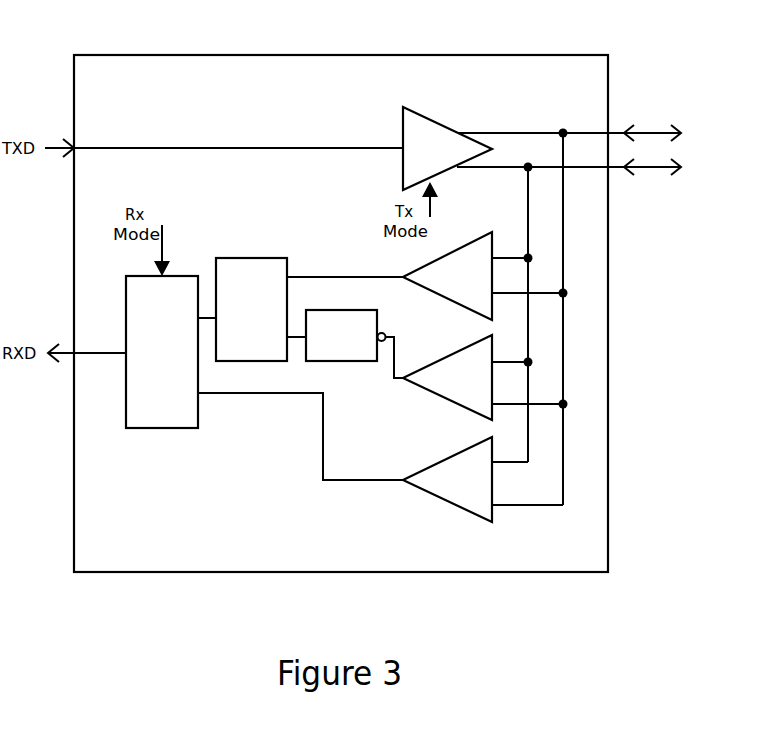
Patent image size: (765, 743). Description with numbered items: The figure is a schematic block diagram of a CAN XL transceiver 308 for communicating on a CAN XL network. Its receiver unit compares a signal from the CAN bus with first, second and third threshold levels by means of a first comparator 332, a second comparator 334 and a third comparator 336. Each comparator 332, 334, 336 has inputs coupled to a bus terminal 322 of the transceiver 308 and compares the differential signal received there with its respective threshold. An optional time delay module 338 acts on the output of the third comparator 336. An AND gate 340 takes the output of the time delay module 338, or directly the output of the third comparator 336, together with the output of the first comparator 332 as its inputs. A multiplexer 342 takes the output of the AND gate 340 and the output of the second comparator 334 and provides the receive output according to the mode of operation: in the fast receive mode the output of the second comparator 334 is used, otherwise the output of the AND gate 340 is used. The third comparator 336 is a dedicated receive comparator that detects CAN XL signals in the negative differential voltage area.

The CAN XL transceiver 308 is at (609, 518).
The bus terminal 322 is at (617, 122).
The first comparator 332 is at (479, 289).
The second comparator 334 is at (479, 492).
The third comparator 336 is at (481, 390).
The time delay module 338 is at (343, 361).
The AND gate 340 is at (271, 361).
The multiplexer 342 is at (126, 405).